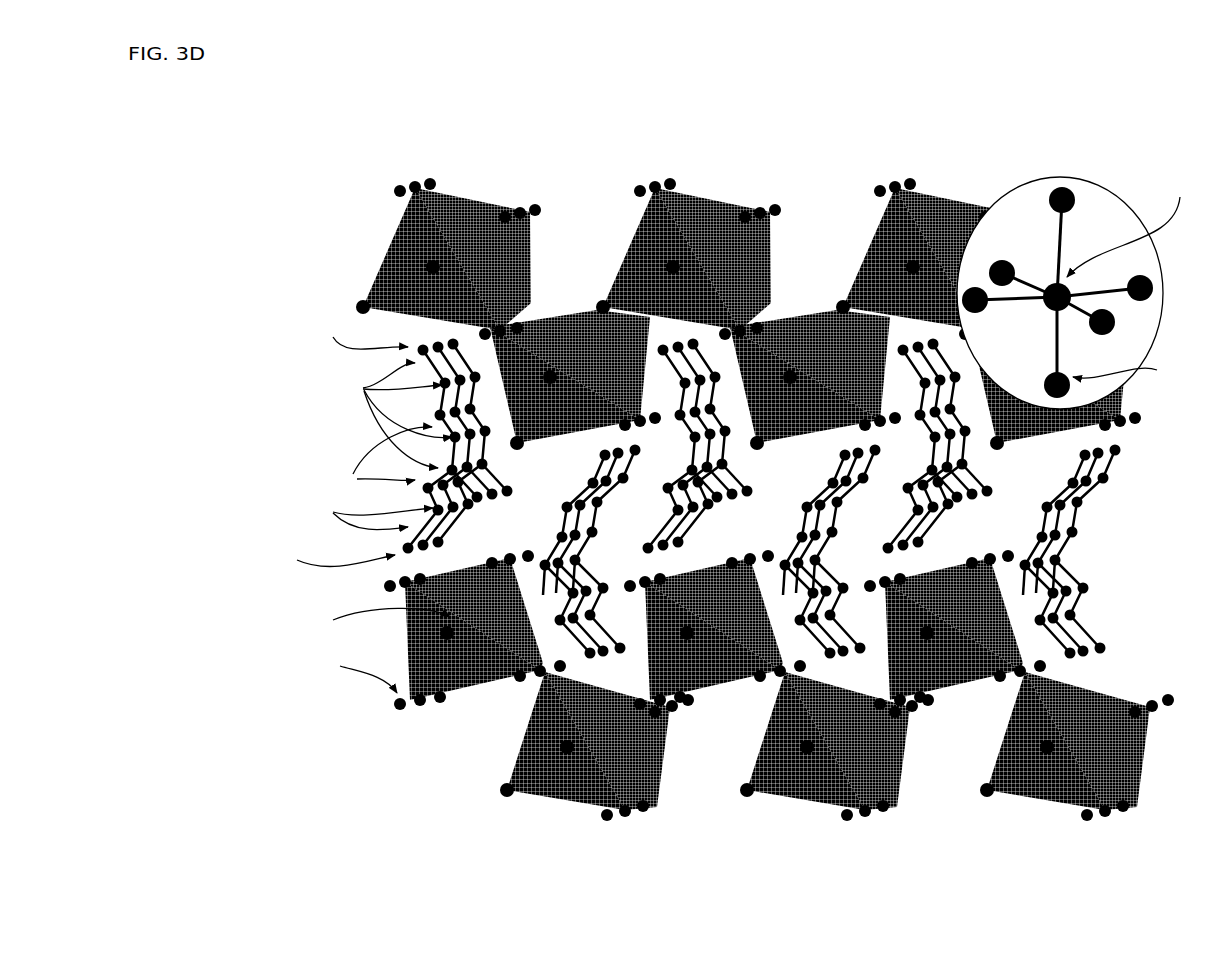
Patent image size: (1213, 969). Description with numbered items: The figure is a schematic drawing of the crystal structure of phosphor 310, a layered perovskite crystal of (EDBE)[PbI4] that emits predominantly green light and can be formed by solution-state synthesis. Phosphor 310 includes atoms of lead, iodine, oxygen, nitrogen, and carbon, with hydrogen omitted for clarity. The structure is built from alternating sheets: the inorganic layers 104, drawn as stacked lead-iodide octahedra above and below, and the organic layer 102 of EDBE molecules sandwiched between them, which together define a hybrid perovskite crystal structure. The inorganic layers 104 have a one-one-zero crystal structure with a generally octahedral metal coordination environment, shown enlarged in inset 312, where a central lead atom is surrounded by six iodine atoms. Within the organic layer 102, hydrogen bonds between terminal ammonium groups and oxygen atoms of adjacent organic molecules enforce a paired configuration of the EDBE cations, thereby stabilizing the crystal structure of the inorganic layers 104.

The phosphor 310 is at (293, 153).
The inset 312 is at (1033, 227).
The inorganic layers 104 is at (303, 297).
The organic layer 102 is at (303, 458).